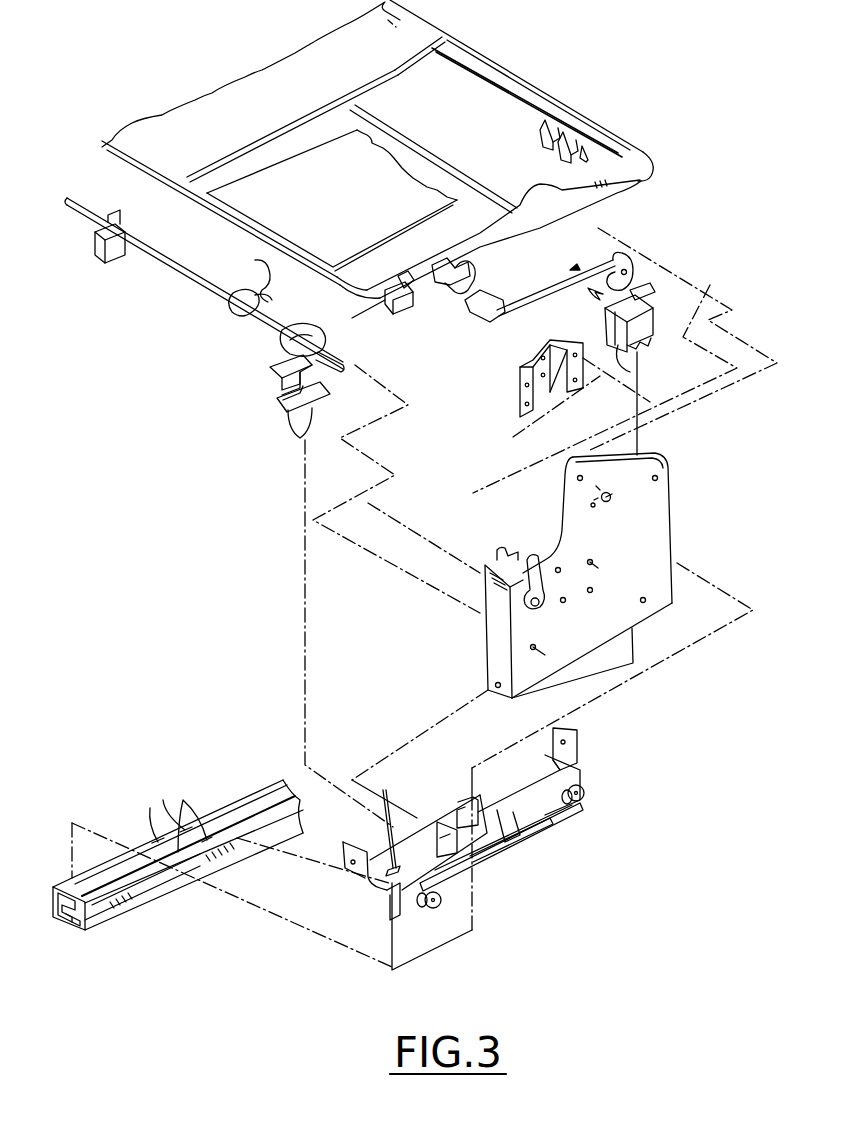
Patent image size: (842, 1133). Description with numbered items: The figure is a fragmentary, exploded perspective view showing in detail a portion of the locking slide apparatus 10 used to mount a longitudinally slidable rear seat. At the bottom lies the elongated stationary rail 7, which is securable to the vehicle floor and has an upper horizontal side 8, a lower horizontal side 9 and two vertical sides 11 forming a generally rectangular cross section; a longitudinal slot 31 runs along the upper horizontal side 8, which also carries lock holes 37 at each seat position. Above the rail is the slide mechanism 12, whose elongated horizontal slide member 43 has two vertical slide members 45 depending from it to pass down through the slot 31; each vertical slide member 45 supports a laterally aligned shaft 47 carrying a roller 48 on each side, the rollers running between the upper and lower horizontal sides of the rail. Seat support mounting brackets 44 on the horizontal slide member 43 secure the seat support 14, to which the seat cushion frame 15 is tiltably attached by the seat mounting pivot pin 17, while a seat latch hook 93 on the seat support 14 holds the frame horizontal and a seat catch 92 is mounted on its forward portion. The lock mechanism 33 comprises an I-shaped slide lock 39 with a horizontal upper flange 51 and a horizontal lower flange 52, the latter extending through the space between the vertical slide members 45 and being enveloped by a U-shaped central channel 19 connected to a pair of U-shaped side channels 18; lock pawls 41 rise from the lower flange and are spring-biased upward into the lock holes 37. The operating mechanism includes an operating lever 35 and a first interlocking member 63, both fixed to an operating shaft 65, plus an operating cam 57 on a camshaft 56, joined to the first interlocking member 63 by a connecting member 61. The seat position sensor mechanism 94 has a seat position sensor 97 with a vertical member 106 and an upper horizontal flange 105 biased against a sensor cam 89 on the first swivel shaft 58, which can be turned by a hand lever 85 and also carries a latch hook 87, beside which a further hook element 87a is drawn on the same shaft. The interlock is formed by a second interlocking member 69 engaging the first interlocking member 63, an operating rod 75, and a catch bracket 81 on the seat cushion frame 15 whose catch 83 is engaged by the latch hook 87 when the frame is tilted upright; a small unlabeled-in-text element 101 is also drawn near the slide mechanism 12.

The stationary rail 7 is at (232, 852).
The upper horizontal side 8 is at (123, 883).
The lower horizontal side 9 is at (55, 905).
The locking slide apparatus 10 is at (765, 480).
The vertical sides 11 is at (106, 916).
The slide mechanism 12 is at (385, 892).
The seat support 14 is at (670, 514).
The seat cushion frame 15 is at (457, 44).
The seat mounting pivot pin 17 is at (608, 492).
The side channels 18 is at (480, 866).
The central channel 19 is at (501, 812).
The slot 31 is at (248, 800).
The lock mechanism 33 is at (640, 288).
The operating lever 35 is at (530, 588).
The lock holes 37 is at (152, 822).
The slide lock 39 is at (708, 300).
The lock pawl 41 is at (640, 348).
The horizontal slide member 43 is at (437, 835).
The seat support mounting brackets 44 is at (345, 840).
The vertical slide members 45 is at (553, 822).
The shaft 47 is at (423, 908).
The roller 48 is at (434, 909).
The horizontal upper flange 51 is at (605, 310).
The horizontal lower flange 52 is at (632, 370).
The camshaft 56 is at (438, 155).
The operating cam 57 is at (620, 280).
The first swivel shaft 58 is at (182, 276).
The connecting member 61 is at (556, 284).
The first interlocking member 63 is at (470, 318).
The operating shaft 65 is at (497, 326).
The second interlocking member 69 is at (471, 268).
The operating rod 75 is at (404, 272).
The catch bracket 81 is at (549, 120).
The catch 83 is at (588, 150).
The hand lever 85 is at (105, 260).
The latch hook 87 is at (232, 316).
The hook 87a is at (256, 261).
The sensor cam 89 is at (282, 345).
The seat catch 92 is at (407, 312).
The seat latch hook 93 is at (497, 555).
The seat position sensor mechanism 94 is at (253, 389).
The seat position sensor 97 is at (295, 430).
The pin 101 is at (383, 790).
The upper horizontal flange 105 is at (338, 360).
The vertical member 106 is at (312, 403).